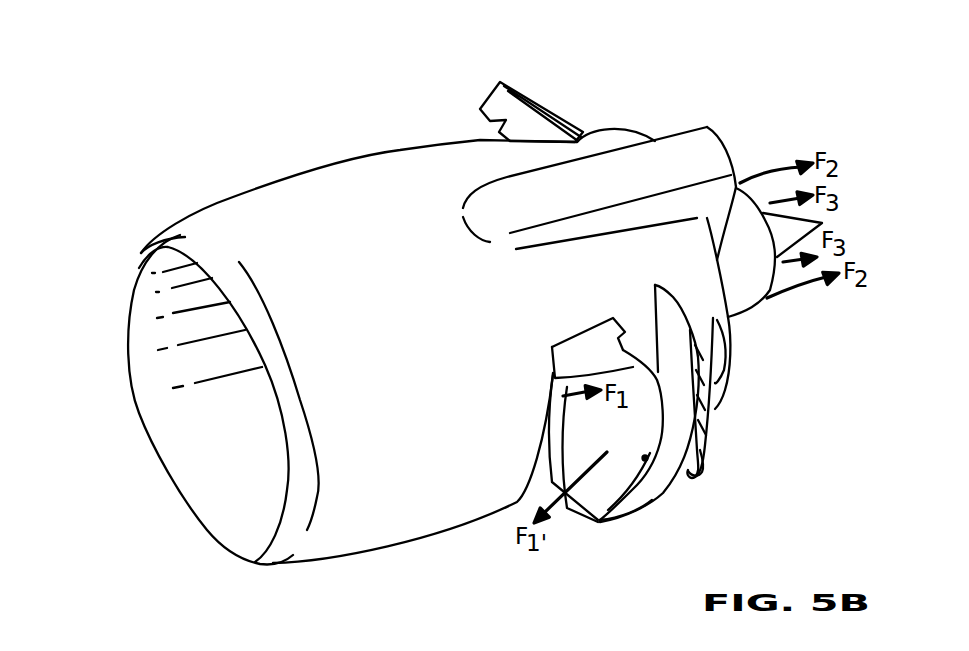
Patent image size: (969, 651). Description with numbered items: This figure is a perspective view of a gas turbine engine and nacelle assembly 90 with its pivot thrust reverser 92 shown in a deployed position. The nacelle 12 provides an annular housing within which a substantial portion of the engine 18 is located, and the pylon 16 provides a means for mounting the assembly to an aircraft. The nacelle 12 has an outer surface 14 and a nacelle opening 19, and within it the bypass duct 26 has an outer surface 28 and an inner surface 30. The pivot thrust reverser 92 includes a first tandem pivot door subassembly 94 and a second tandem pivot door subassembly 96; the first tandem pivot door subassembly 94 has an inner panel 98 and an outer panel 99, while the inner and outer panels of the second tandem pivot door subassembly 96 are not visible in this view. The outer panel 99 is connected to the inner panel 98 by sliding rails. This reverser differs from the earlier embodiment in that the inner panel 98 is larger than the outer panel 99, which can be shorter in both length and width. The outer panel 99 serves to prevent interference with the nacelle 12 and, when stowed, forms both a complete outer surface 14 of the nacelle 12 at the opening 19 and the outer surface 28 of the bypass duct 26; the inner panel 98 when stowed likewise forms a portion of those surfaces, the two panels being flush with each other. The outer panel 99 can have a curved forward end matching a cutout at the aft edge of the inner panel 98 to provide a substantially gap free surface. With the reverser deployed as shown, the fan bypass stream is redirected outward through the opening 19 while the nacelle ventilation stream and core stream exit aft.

The gas turbine engine and nacelle assembly 90 is at (141, 158).
The nacelle 12 is at (316, 158).
The outer surface 14 is at (385, 485).
The second tandem pivot door subassembly 96 is at (575, 104).
The pylon 16 is at (673, 150).
The engine 18 is at (848, 189).
The nacelle opening 19 is at (570, 348).
The inner surface 30 is at (596, 350).
The bypass duct 26 is at (560, 368).
The pivot thrust reverser 92 is at (725, 413).
The first tandem pivot door subassembly 94 is at (679, 494).
The outer panel 99 is at (703, 465).
The inner panel 98 is at (651, 483).
The outer surface 28 is at (631, 440).